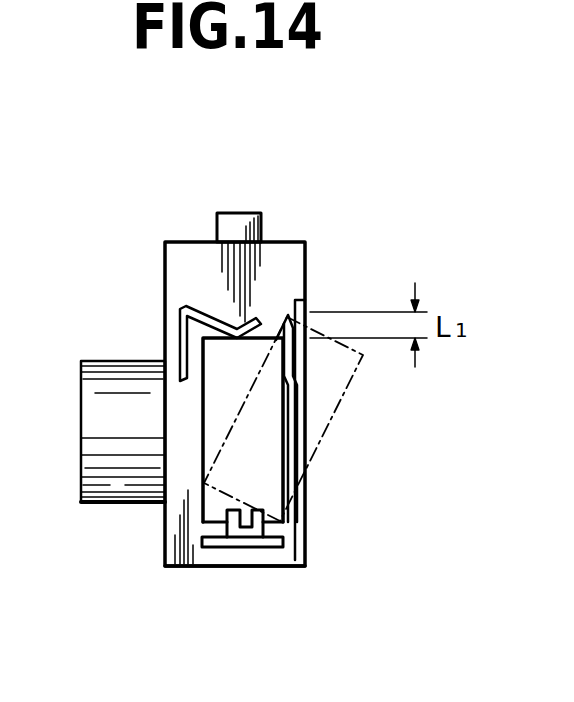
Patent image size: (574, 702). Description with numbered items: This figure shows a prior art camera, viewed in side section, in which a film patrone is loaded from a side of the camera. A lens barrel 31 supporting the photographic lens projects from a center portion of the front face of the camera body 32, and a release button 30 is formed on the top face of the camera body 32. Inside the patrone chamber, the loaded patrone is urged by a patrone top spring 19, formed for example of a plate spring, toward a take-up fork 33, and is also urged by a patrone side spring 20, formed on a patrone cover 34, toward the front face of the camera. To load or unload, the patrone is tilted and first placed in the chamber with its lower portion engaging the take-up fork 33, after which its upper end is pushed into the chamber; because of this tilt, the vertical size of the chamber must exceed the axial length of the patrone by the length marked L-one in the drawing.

The patrone top spring 19 is at (194, 303).
The patrone side spring 20 is at (283, 399).
The release button 30 is at (244, 226).
The lens barrel 31 is at (113, 482).
The camera body 32 is at (292, 270).
The take-up fork 33 is at (233, 540).
The patrone cover 34 is at (300, 552).